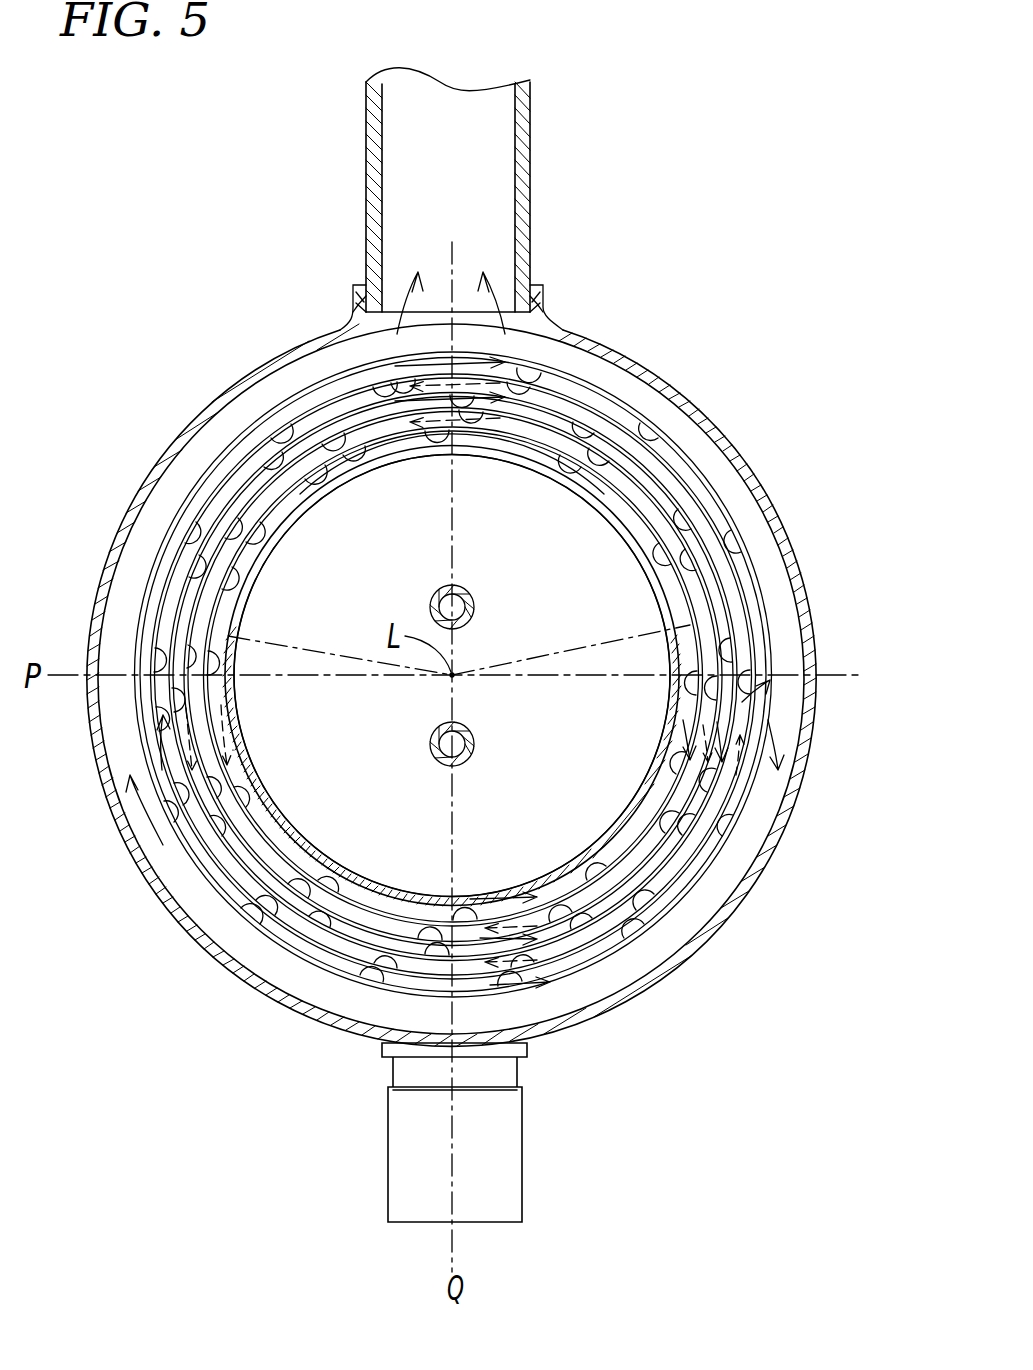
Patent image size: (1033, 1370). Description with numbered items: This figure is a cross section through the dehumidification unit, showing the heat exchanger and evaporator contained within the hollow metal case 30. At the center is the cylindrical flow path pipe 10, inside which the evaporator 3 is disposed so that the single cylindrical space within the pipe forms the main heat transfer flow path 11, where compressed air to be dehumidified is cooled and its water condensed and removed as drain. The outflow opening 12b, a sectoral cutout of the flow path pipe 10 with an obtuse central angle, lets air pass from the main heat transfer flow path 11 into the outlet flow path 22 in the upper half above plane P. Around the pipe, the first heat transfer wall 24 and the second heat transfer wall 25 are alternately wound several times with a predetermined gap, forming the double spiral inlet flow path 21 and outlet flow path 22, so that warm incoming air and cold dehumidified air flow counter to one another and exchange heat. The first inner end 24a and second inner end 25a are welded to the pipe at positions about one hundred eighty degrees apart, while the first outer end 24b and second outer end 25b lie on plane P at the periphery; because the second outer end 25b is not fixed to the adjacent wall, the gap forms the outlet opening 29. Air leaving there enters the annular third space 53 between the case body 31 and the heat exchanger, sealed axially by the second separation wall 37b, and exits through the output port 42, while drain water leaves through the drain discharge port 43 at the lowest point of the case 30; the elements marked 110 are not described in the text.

The evaporator 3 is at (545, 545).
The flow path pipe 10 is at (253, 780).
The main heat transfer flow path 11 is at (380, 588).
The outflow opening 12b is at (405, 456).
The inlet flow path 21 is at (413, 985).
The outlet flow path 22 is at (757, 642).
The first heat transfer wall 24 is at (297, 956).
The first inner end 24a is at (682, 680).
The first outer end 24b is at (146, 682).
The second heat transfer wall 25 is at (220, 876).
The second inner end 25a is at (232, 672).
The second outer end 25b is at (770, 672).
The outlet opening 29 is at (766, 702).
The case 30 is at (612, 302).
The case body 31 is at (715, 420).
The second separation wall 37b is at (720, 886).
The output port 42 is at (393, 158).
The drain discharge port 43 is at (490, 1165).
The third space 53 is at (764, 479).
The nozzle 110 is at (471, 600).